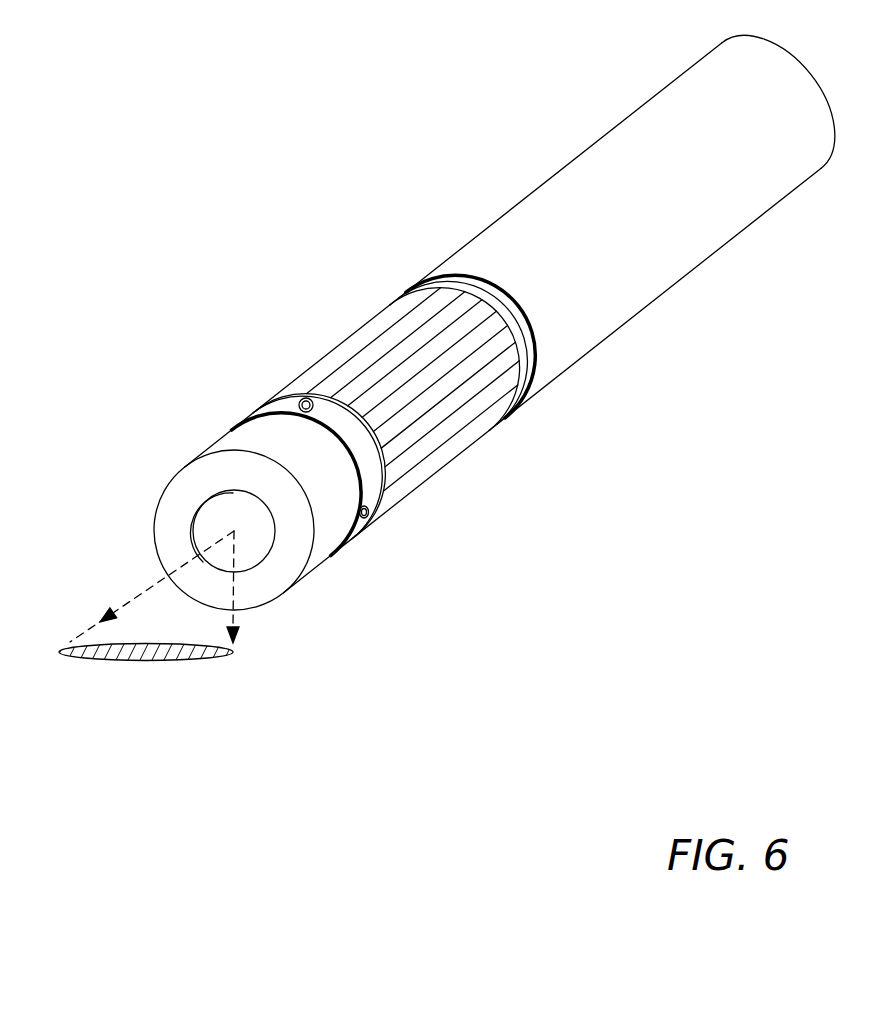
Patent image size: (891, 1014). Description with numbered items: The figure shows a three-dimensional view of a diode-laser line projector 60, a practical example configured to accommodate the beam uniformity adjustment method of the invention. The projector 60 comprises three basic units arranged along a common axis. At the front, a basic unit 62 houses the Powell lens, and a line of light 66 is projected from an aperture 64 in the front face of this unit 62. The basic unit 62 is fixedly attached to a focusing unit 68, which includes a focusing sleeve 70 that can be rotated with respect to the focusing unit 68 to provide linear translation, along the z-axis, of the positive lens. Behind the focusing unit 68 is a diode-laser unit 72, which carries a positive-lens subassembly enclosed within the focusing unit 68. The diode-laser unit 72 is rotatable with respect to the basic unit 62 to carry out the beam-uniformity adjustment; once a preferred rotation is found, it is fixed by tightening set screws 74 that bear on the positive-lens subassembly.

The diode-laser line projector 60 is at (494, 361).
The basic unit 62 is at (328, 562).
The aperture 64 is at (218, 512).
The line of light 66 is at (157, 660).
The focusing unit 68 is at (272, 403).
The focusing sleeve 70 is at (362, 333).
The diode-laser unit 72 is at (690, 272).
The set screws 74 is at (303, 397).